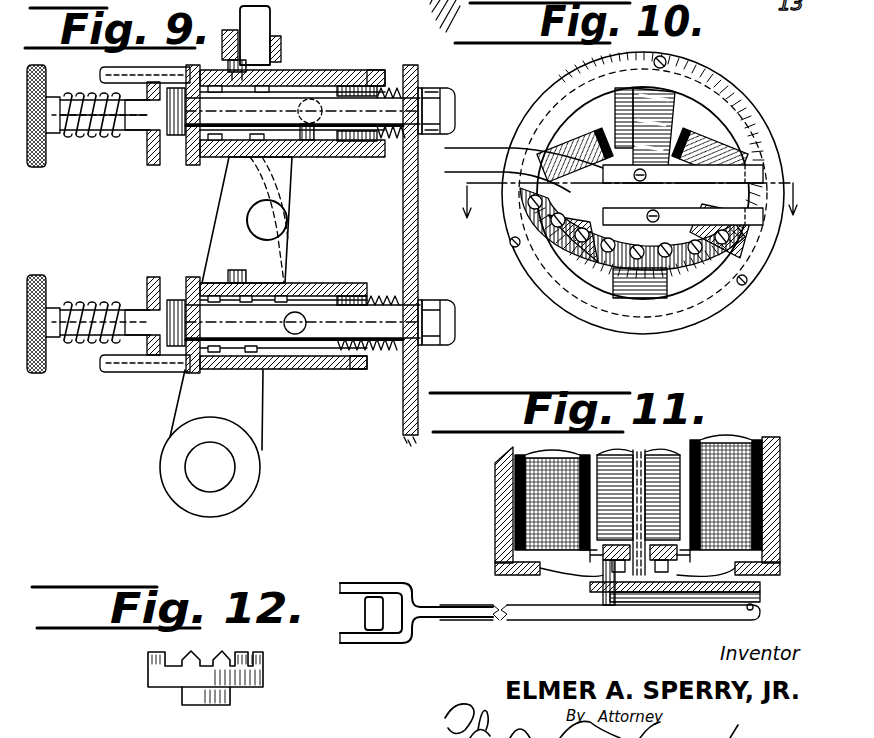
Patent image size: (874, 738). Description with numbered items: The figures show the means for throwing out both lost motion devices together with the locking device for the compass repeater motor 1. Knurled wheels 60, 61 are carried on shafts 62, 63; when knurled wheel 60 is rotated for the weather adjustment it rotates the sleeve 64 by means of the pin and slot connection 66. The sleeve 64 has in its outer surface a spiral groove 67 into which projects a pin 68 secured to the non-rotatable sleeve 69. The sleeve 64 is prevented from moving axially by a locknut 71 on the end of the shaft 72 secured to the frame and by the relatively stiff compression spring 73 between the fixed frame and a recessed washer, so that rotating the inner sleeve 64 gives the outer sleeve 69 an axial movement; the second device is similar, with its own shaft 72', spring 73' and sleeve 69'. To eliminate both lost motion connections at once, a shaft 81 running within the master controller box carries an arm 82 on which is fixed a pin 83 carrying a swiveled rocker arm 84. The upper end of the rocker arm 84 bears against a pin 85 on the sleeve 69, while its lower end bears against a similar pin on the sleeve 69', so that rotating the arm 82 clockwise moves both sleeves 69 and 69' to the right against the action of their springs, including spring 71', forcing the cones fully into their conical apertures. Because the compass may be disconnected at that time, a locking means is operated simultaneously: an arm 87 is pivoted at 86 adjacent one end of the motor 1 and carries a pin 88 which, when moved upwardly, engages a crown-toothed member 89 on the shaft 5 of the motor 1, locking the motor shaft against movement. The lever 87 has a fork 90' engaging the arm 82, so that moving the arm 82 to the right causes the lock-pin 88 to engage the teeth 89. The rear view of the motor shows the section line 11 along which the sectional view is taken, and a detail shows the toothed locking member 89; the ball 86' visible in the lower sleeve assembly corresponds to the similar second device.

In FIG. 10, the motor 1 is at (740, 101).
In FIG. 11, the motor 1 is at (505, 487).
In FIG. 11, the shaft 5 is at (635, 477).
In FIG. 10, the section line 11 is at (634, 194).
In FIG. 9, the knurled wheel 60 is at (49, 131).
In FIG. 9, the knurled wheel 61 is at (43, 275).
In FIG. 9, the shaft 62 is at (113, 116).
In FIG. 9, the shaft 63 is at (109, 312).
In FIG. 9, the sleeve 64 is at (308, 141).
In FIG. 9, the pin and slot connection 66 is at (163, 77).
In FIG. 9, the spiral groove 67 is at (230, 158).
In FIG. 9, the pin 68 is at (241, 78).
In FIG. 9, the non-rotatable sleeve 69 is at (390, 62).
In FIG. 9, the sleeve 69' is at (378, 379).
In FIG. 9, the locknut 71 is at (176, 133).
In FIG. 9, the spring 71' is at (181, 295).
In FIG. 9, the shaft 72 is at (303, 111).
In FIG. 9, the shaft 72' is at (303, 322).
In FIG. 9, the compression spring 73 is at (371, 140).
In FIG. 9, the compression spring 73' is at (375, 307).
In FIG. 9, the shaft 81 is at (210, 467).
In FIG. 9, the arm 82 is at (231, 303).
In FIG. 11, the arm 82 is at (370, 615).
In FIG. 9, the pin 83 is at (267, 220).
In FIG. 9, the rocker arm 84 is at (278, 265).
In FIG. 9, the pin 85 is at (323, 110).
In FIG. 10, the pivot 86 is at (704, 225).
In FIG. 11, the pivot 86 is at (774, 610).
In FIG. 9, the ball 86' is at (323, 320).
In FIG. 10, the arm 87 is at (477, 157).
In FIG. 11, the arm 87 is at (550, 619).
In FIG. 10, the pin 88 is at (611, 192).
In FIG. 11, the pin 88 is at (590, 598).
In FIG. 11, the crown-toothed member 89 is at (667, 572).
In FIG. 12, the crown-toothed member 89 is at (263, 665).
In FIG. 9, the fork 90' is at (300, 41).
In FIG. 11, the fork 90' is at (418, 573).